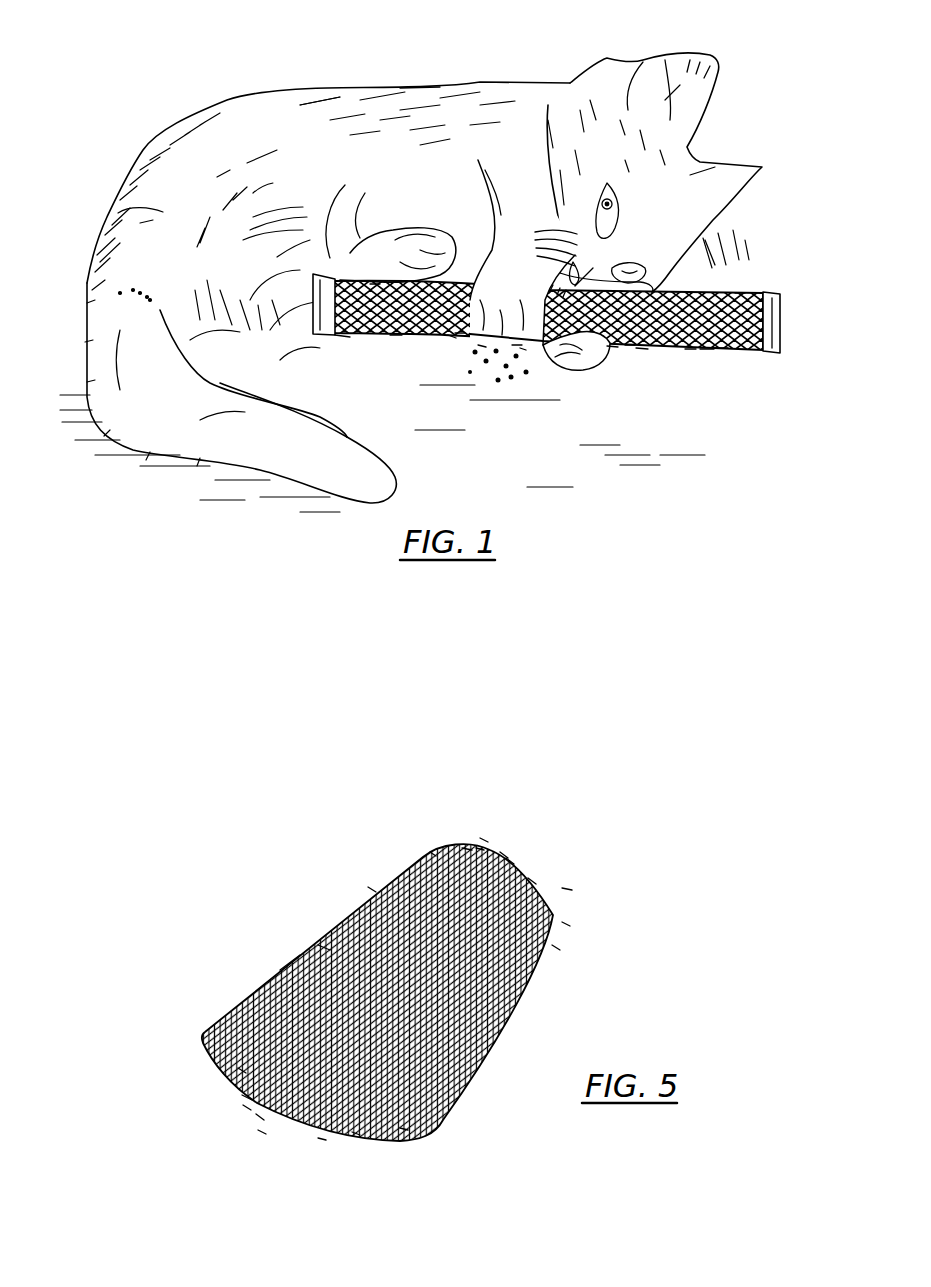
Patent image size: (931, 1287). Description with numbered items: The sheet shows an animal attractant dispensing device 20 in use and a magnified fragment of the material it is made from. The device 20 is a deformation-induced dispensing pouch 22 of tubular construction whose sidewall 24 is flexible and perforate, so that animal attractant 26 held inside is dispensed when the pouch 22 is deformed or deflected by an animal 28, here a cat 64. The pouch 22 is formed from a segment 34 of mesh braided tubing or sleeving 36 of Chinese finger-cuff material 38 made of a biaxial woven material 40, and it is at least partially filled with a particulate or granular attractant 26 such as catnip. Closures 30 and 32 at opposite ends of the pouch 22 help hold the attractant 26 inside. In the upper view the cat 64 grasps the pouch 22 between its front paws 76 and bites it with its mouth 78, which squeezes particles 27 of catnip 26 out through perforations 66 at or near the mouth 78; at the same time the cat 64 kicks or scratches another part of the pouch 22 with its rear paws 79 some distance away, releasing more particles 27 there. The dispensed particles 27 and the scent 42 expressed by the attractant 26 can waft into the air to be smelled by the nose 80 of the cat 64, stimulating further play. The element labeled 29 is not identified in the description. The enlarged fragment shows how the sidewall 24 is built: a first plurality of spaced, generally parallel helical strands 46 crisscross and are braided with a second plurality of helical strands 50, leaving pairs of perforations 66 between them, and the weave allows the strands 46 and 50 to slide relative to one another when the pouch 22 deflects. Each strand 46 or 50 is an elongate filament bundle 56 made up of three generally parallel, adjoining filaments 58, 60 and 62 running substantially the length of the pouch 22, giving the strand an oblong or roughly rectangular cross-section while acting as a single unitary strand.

In FIG. 1, the animal attractant dispensing device 20 is at (778, 282).
In FIG. 5, the animal attractant dispensing device 20 is at (192, 990).
In FIG. 1, the deformation-induced dispensing pouch 22 is at (707, 364).
In FIG. 5, the deformation-induced dispensing pouch 22 is at (571, 889).
In FIG. 1, the sidewall 24 is at (690, 352).
In FIG. 1, the animal attractant 26 is at (502, 376).
In FIG. 1, the particles 27 is at (480, 347).
In FIG. 1, the animal 28 is at (160, 138).
In FIG. 1, the tube wall 29 is at (452, 343).
In FIG. 1, the closure 30 is at (311, 283).
In FIG. 1, the closure 32 is at (757, 352).
In FIG. 1, the segment 34 is at (340, 340).
In FIG. 1, the mesh braided tubing or sleeving 36 is at (397, 337).
In FIG. 5, the mesh braided tubing or sleeving 36 is at (561, 950).
In FIG. 1, the Chinese finger-cuff material 38 is at (613, 348).
In FIG. 5, the Chinese finger-cuff material 38 is at (294, 924).
In FIG. 1, the biaxial woven material 40 is at (740, 292).
In FIG. 5, the biaxial woven material 40 is at (481, 847).
In FIG. 1, the scent 42 is at (712, 247).
In FIG. 5, the first elongate strands 46 is at (433, 848).
In FIG. 5, the second elongate strands 50 is at (512, 860).
In FIG. 5, the elongate filament bundle 56 is at (485, 834).
In FIG. 5, the elongate filament 58 is at (467, 850).
In FIG. 5, the elongate filament 60 is at (247, 1107).
In FIG. 5, the elongate filament 62 is at (503, 850).
In FIG. 1, the cat 64 is at (420, 90).
In FIG. 1, the perforations 66 is at (375, 284).
In FIG. 5, the perforations 66 is at (367, 887).
In FIG. 1, the front paws 76 is at (510, 297).
In FIG. 1, the mouth 78 is at (553, 287).
In FIG. 1, the rear paws 79 is at (403, 242).
In FIG. 1, the nose 80 is at (585, 268).